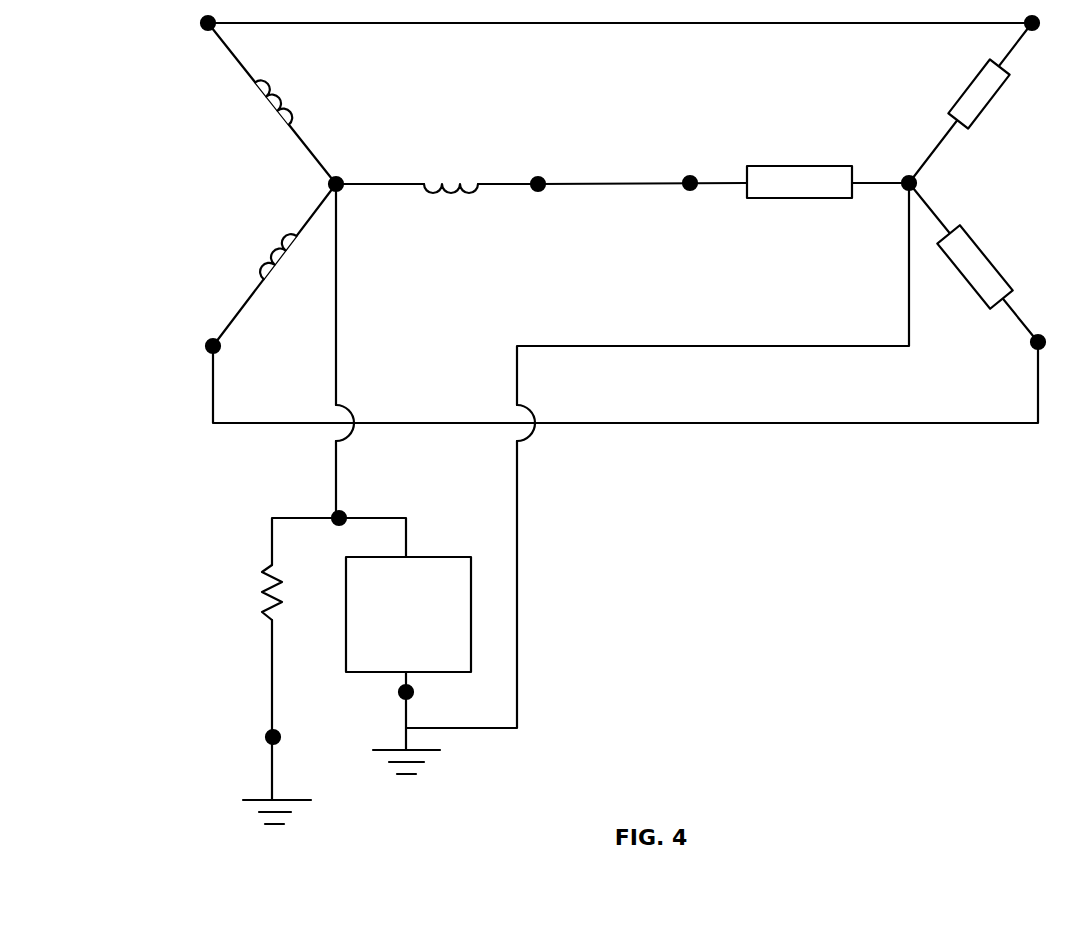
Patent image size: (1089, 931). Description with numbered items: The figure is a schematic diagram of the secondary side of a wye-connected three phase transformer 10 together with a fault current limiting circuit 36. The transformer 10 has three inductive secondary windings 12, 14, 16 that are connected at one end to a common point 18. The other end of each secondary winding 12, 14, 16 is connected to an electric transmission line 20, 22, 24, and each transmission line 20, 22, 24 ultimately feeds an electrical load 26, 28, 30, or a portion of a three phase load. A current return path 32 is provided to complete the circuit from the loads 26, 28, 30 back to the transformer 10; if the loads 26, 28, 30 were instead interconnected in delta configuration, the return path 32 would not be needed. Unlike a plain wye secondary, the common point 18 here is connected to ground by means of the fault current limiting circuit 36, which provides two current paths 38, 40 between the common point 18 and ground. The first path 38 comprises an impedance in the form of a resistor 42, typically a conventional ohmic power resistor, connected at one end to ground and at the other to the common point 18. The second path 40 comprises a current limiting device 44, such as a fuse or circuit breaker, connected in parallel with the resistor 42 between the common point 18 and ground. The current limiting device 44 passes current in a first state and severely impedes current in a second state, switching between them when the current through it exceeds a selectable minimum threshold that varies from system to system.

The three phase transformer 10 is at (218, 155).
The secondary winding 12 is at (265, 259).
The secondary winding 14 is at (465, 184).
The secondary winding 16 is at (262, 96).
The common point 18 is at (340, 178).
The electric transmission line 20 is at (695, 424).
The electric transmission line 22 is at (598, 183).
The electric transmission line 24 is at (594, 18).
The electrical load 26 is at (987, 255).
The electrical load 28 is at (788, 166).
The electrical load 30 is at (990, 103).
The current return path 32 is at (625, 346).
The fault current limiting circuit 36 is at (425, 484).
The current path 38 is at (272, 537).
The current path 40 is at (406, 522).
The resistor 42 is at (262, 597).
The current limiting device 44 is at (346, 643).